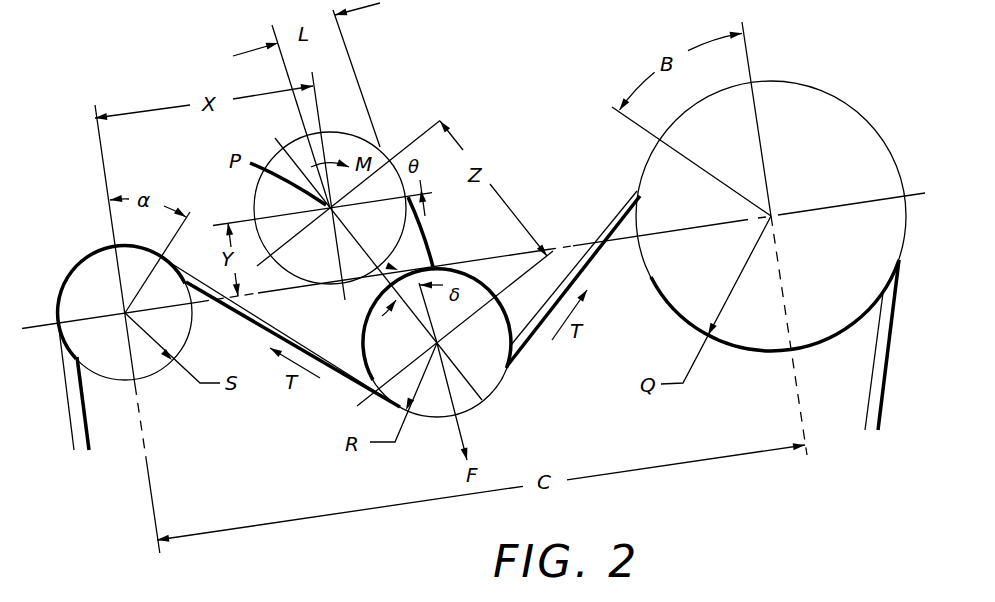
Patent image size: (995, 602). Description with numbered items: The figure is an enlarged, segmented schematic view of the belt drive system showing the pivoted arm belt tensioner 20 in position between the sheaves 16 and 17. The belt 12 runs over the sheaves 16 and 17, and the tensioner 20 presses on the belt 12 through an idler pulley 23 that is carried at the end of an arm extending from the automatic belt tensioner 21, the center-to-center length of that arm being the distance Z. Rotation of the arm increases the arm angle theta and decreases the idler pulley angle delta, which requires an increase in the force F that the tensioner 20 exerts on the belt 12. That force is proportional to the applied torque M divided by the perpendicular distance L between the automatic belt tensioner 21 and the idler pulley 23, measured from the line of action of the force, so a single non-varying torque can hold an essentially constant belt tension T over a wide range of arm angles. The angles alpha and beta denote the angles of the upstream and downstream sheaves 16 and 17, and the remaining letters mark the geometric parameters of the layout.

The belt 12 is at (619, 208).
The sheave 16 is at (868, 137).
The sheave 17 is at (77, 277).
The pivoted arm belt tensioner 20 is at (421, 254).
The automatic belt tensioner 21 is at (260, 207).
The idler pulley 23 is at (483, 401).